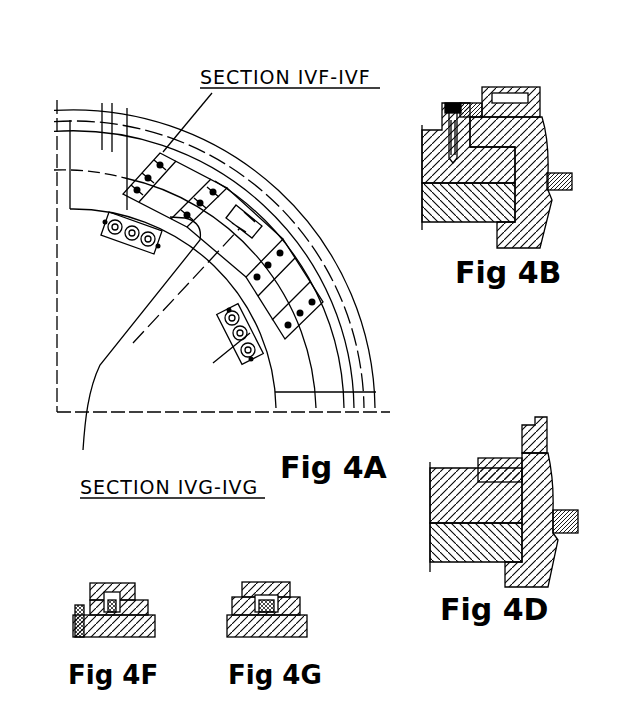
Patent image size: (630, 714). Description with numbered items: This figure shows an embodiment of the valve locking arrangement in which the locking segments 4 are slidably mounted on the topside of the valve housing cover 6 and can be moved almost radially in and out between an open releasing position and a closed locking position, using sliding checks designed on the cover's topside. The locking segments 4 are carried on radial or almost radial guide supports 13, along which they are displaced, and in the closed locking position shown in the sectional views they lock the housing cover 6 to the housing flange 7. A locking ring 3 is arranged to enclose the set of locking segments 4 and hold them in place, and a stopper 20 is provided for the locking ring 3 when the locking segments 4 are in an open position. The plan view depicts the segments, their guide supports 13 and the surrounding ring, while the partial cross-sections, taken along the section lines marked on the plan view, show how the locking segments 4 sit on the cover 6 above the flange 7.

In FIG. 4A, the locking ring 3 is at (362, 328).
In FIG. 4B, the locking ring 3 is at (565, 173).
In FIG. 4D, the locking ring 3 is at (572, 510).
In FIG. 4B, the locking segment 4 is at (545, 130).
In FIG. 4D, the locking segment 4 is at (553, 477).
In FIG. 4A, the housing cover 6 is at (198, 398).
In FIG. 4B, the housing cover 6 is at (418, 140).
In FIG. 4D, the housing cover 6 is at (445, 468).
In FIG. 4B, the housing flange 7 is at (420, 210).
In FIG. 4D, the housing flange 7 is at (430, 545).
In FIG. 4A, the guide support 13 is at (185, 150).
In FIG. 4B, the guide support 13 is at (470, 103).
In FIG. 4D, the stopper 20 is at (545, 418).